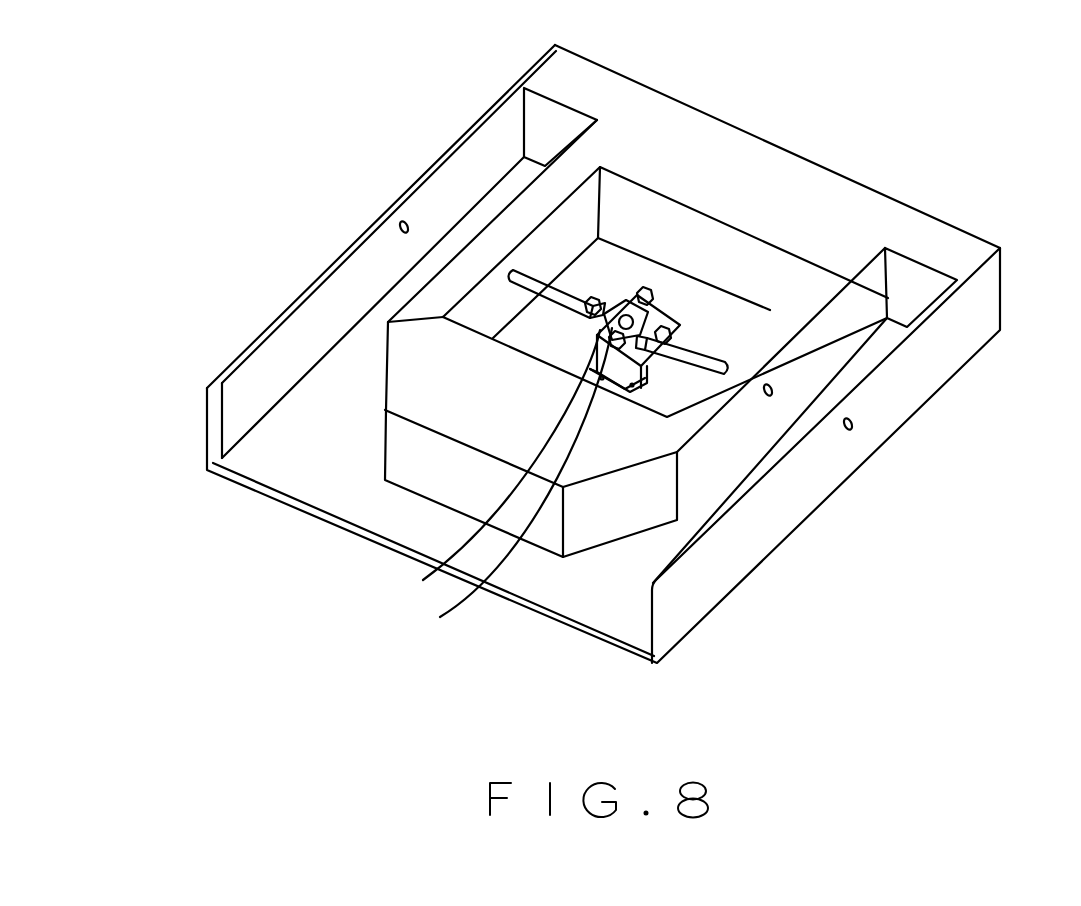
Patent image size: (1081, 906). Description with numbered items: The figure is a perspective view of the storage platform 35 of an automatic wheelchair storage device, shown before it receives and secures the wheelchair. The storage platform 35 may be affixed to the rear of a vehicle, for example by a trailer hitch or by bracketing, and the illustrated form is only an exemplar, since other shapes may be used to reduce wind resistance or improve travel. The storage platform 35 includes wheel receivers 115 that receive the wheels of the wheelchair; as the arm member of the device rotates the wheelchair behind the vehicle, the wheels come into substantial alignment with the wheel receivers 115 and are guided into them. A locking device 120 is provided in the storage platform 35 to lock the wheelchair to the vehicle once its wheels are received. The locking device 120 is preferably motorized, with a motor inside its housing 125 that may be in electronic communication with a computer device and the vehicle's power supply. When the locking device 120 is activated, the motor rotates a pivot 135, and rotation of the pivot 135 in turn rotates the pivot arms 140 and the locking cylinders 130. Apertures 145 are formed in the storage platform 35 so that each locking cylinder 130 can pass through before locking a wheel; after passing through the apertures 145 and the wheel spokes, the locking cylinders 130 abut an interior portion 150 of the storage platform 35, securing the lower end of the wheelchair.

The storage platform 35 is at (297, 176).
The wheel receivers 115 is at (338, 400).
The locking device 120 is at (621, 298).
The housing 125 is at (660, 317).
The locking cylinders 130 is at (527, 282).
The pivot 135 is at (672, 328).
The pivot arms 140 is at (496, 488).
The apertures 145 is at (403, 222).
The interior portion 150 is at (352, 277).